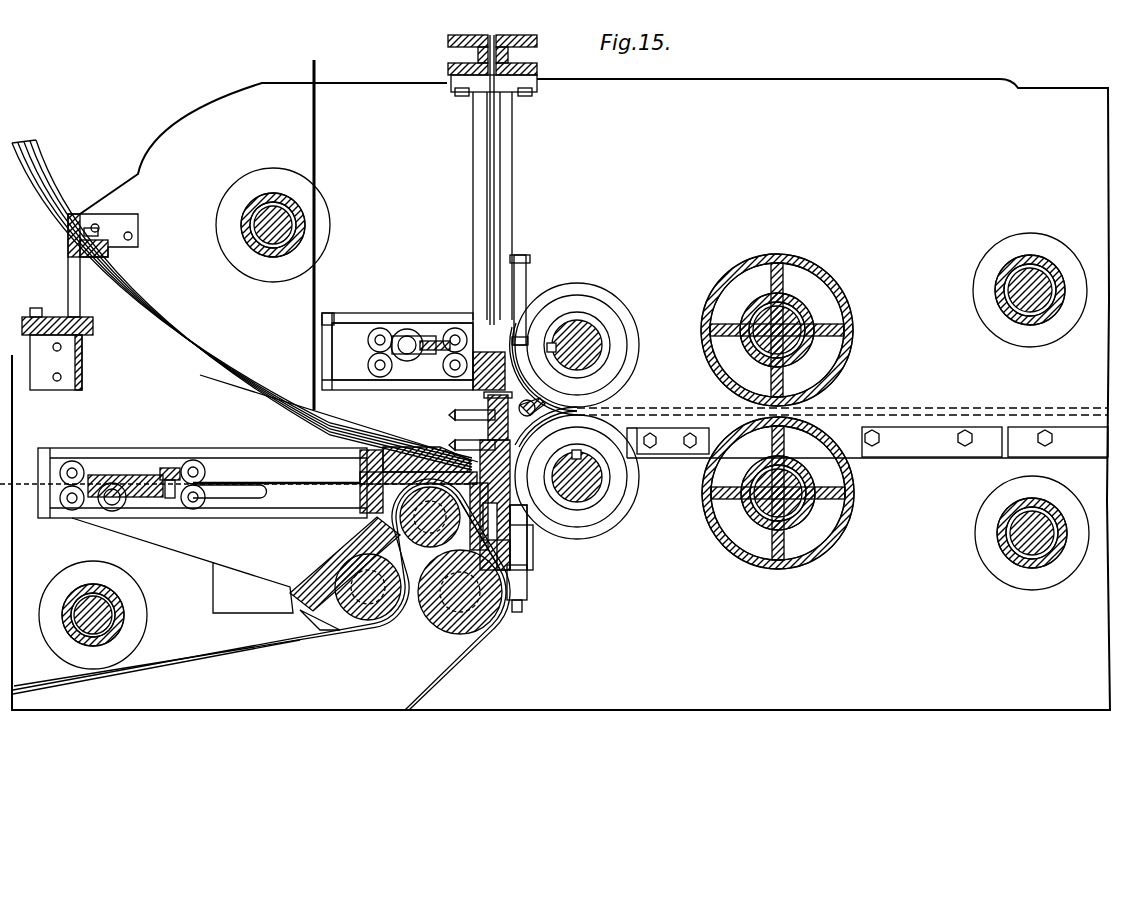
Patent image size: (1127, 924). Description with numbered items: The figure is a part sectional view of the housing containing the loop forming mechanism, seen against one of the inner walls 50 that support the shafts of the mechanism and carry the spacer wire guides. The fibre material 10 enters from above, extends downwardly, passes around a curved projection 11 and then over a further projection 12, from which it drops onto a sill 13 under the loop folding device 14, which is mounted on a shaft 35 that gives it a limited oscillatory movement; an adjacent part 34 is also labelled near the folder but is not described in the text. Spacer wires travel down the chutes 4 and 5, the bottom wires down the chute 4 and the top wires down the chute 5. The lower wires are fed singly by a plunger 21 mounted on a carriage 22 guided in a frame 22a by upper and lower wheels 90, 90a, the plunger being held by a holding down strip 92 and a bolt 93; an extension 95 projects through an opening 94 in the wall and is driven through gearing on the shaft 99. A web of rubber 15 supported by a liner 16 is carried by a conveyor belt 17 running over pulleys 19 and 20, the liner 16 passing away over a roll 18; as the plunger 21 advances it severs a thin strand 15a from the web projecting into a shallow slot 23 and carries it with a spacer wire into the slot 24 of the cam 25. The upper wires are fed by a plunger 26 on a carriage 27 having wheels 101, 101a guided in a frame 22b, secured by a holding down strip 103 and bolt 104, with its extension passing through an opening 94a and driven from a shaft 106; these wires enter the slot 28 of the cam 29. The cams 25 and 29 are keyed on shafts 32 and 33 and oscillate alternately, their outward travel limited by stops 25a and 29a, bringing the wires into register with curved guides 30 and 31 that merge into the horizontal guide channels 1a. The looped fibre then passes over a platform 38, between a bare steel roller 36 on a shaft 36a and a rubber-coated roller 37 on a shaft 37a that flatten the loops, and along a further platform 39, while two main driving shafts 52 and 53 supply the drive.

The guide channels 1a is at (920, 468).
The chute 4 is at (198, 365).
The chute 5 is at (492, 165).
The material for forming the loops 10 is at (317, 124).
The curved projection 11 is at (318, 408).
The further projection 12 is at (490, 412).
The sill 13 is at (380, 538).
The loop folding device 14 is at (600, 404).
The web of rubber 15 is at (194, 655).
The thin strand 15a is at (505, 560).
The liner 16 is at (228, 656).
The conveyor belt 17 is at (440, 548).
The roll 18 is at (432, 620).
The pulley 19 is at (403, 530).
The pulley 20 is at (366, 612).
The plunger 21 is at (290, 488).
The carriage 22 is at (150, 495).
The frame 22a is at (148, 453).
The frame 22b is at (326, 318).
The shallow slot 23 is at (360, 477).
The slot 24 is at (697, 427).
The cam 25 is at (604, 518).
The stop 25a is at (535, 568).
The plunger 26 is at (500, 322).
The carriage 27 is at (363, 352).
The slot 28 is at (537, 326).
The cam 29 is at (594, 310).
The stop 29a is at (528, 312).
The curved guide 30 is at (522, 520).
The curved guide 31 is at (603, 395).
The shaft 32 is at (603, 478).
The shaft 33 is at (597, 338).
The shaft end 34 is at (547, 423).
The shaft 35 is at (480, 400).
The roller 36 is at (835, 292).
The shaft 36a is at (773, 322).
The roller 37 is at (852, 494).
The shaft 37a is at (773, 505).
The platform 38 is at (694, 445).
The platform 39 is at (988, 428).
The inner wall 50 is at (800, 101).
The main driving shaft 52 is at (1012, 530).
The main driving shaft 53 is at (1033, 282).
The wheel 90 is at (66, 506).
The wheel 90a is at (72, 468).
The holding down strip 92 is at (196, 466).
The bolt 93 is at (180, 470).
The opening 94 is at (255, 500).
The opening 94a is at (406, 328).
The extension 95 is at (120, 508).
The shaft 99 is at (105, 617).
The wheel 101 is at (362, 360).
The wheel 101a is at (372, 330).
The holding down strip 103 is at (447, 325).
The bolt 104 is at (448, 340).
The shaft 106 is at (262, 222).